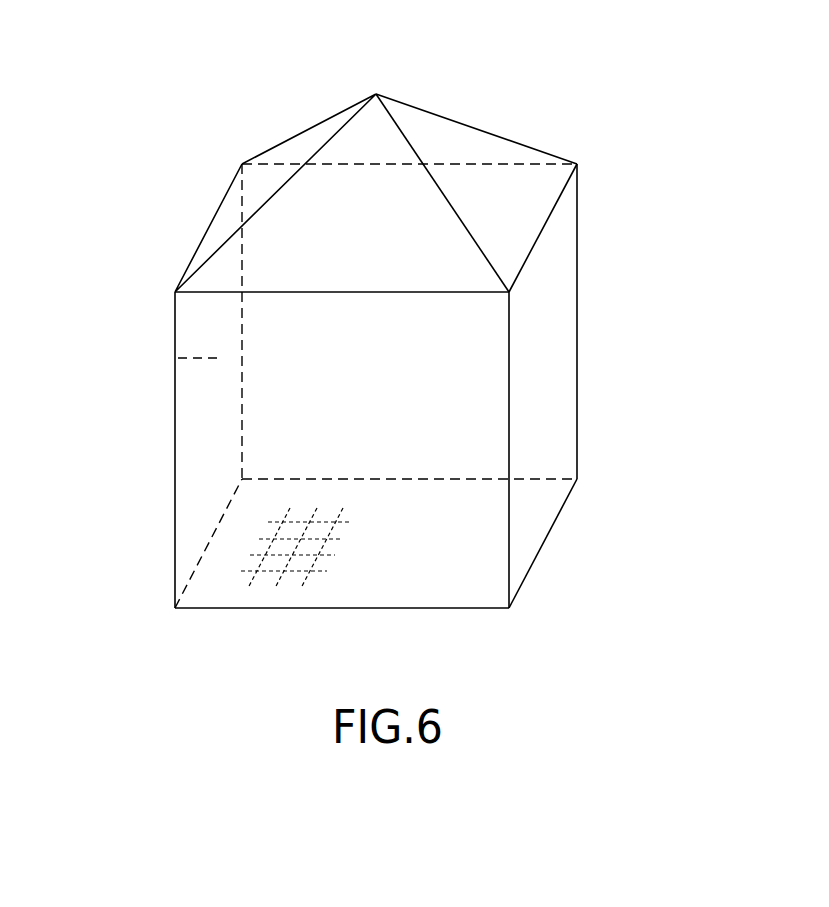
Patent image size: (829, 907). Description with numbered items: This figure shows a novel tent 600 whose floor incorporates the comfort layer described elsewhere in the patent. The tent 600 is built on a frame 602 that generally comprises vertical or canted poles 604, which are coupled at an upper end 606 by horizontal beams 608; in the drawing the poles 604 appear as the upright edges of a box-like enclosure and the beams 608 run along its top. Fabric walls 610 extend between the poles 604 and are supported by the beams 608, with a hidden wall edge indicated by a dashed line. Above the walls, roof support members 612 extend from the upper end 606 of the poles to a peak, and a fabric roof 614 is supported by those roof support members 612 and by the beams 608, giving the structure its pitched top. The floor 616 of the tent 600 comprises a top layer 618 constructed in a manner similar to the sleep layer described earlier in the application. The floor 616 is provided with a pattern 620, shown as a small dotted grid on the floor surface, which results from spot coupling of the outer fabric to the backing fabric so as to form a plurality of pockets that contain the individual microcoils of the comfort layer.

The tent 600 is at (158, 156).
The frame 602 is at (175, 455).
The poles 604 is at (577, 396).
The upper end 606 is at (577, 164).
The horizontal beams 608 is at (543, 230).
The fabric walls 610 is at (175, 360).
The roof support members 612 is at (410, 106).
The fabric roof 614 is at (447, 136).
The floor 616 is at (447, 567).
The top layer 618 is at (485, 570).
The pattern 620 is at (278, 572).